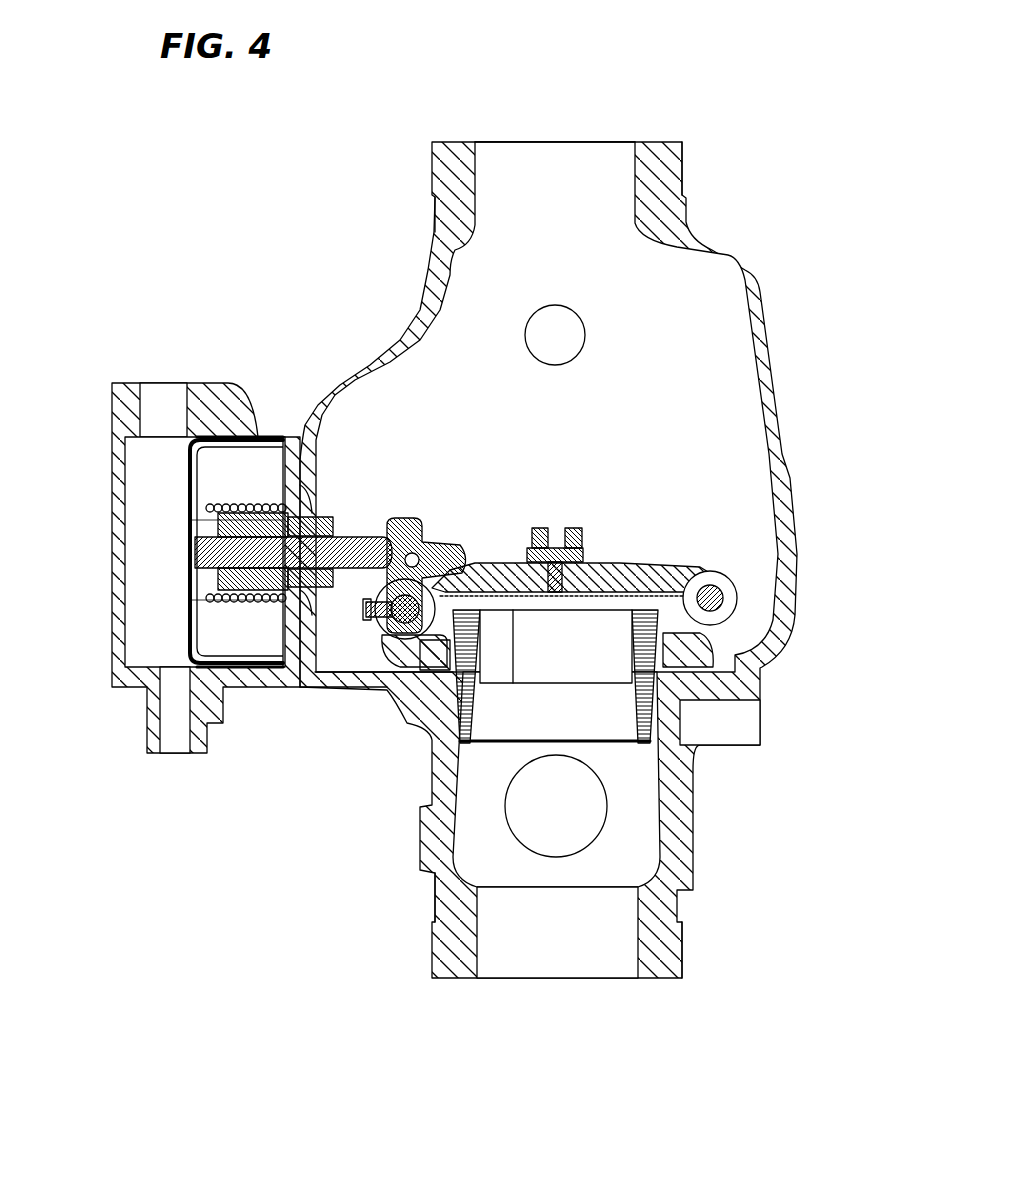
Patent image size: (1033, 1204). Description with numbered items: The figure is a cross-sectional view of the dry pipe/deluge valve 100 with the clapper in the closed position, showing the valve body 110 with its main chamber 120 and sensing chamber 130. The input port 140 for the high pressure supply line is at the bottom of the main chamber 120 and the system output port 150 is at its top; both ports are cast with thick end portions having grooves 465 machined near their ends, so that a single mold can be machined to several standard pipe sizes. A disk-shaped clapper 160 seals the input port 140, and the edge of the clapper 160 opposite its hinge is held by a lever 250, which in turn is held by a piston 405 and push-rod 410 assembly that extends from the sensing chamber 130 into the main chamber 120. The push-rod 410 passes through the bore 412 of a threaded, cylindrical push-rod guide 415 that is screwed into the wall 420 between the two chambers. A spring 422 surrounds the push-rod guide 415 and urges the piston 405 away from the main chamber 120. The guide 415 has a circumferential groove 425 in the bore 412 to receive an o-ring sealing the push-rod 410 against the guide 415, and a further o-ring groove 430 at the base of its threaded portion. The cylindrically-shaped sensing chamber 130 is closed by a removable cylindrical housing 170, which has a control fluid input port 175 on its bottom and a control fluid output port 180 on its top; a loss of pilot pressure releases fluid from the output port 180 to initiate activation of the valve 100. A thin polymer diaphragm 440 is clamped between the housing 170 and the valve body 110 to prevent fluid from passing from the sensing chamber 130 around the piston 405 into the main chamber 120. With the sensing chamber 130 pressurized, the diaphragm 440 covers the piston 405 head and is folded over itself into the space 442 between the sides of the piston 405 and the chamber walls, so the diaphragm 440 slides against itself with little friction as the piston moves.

The dry pipe/deluge valve 100 is at (762, 132).
The valve body 110 is at (589, 560).
The main chamber 120 is at (700, 442).
The sensing chamber 130 is at (150, 548).
The input port 140 is at (570, 980).
The system output port 150 is at (565, 141).
The clapper 160 is at (610, 565).
The removable cylindrical housing 170 is at (160, 568).
The control fluid input port 175 is at (175, 755).
The control fluid output port 180 is at (160, 383).
The lever 250 is at (410, 518).
The piston 405 is at (190, 608).
The push-rod 410 is at (368, 537).
The bore 412 is at (300, 690).
The push-rod guide 415 is at (337, 515).
The wall 420 is at (357, 687).
The spring 422 is at (215, 505).
The circumferential groove 425 is at (255, 600).
The o-ring groove 430 is at (300, 485).
The diaphragm 440 is at (190, 500).
The space 442 is at (250, 437).
The grooves 465 is at (683, 190).